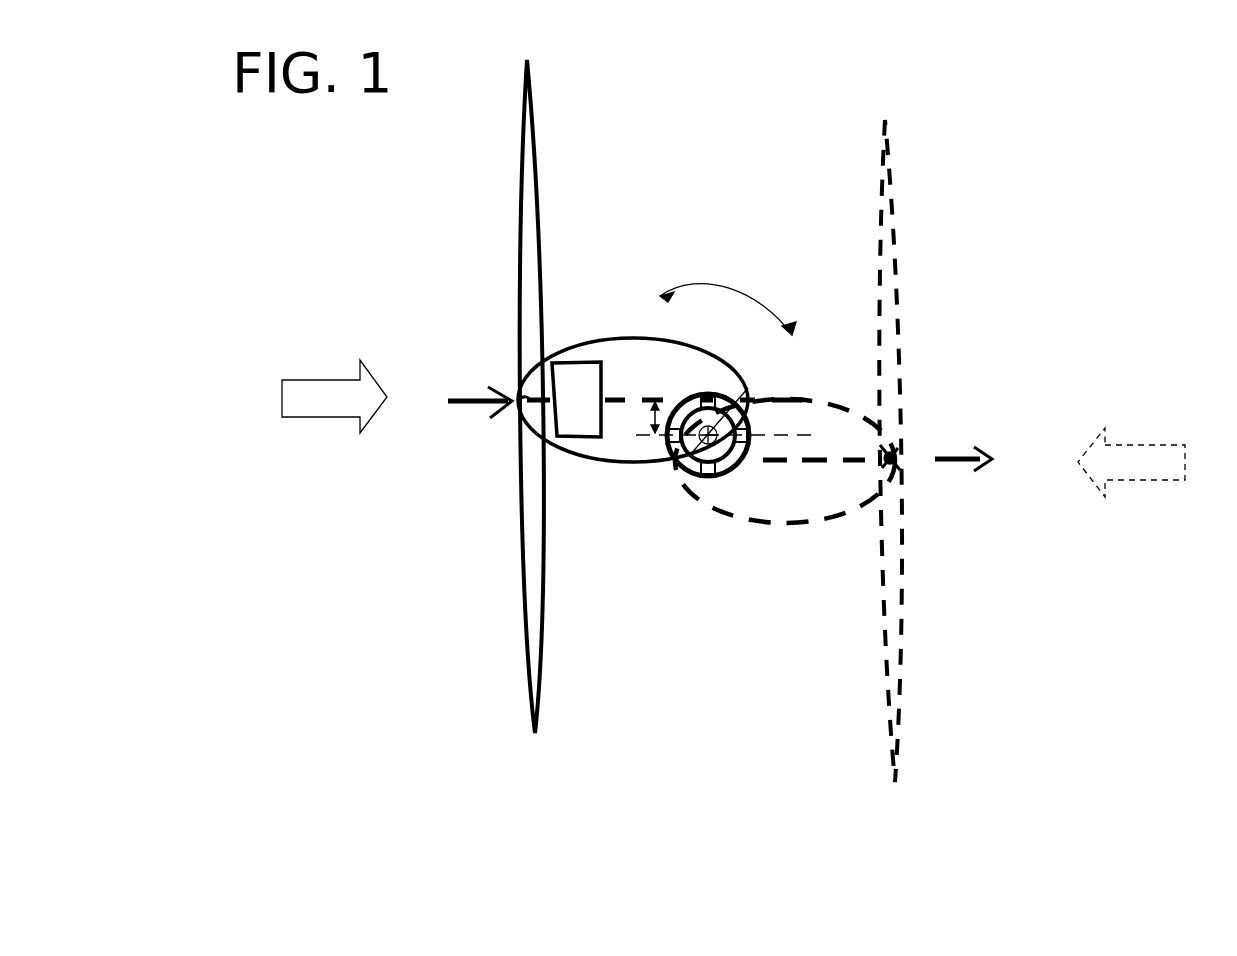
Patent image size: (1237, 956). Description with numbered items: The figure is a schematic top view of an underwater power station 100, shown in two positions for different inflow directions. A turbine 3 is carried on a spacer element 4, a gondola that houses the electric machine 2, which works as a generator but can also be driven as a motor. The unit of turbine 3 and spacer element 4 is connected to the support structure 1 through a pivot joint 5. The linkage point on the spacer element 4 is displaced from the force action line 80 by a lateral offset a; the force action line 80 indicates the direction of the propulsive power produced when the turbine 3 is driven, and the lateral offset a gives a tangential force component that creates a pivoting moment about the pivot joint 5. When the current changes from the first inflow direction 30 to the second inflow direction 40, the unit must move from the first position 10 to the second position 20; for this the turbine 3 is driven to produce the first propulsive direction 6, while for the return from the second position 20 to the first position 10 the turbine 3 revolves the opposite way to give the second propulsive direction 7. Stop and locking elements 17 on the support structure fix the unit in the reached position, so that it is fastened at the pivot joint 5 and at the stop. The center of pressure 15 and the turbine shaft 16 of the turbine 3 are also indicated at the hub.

The support structure 1 is at (674, 462).
The electric machine 2 is at (582, 399).
The turbine 3 is at (533, 152).
The spacer element 4 is at (612, 352).
The pivot joint 5 is at (741, 398).
The first propulsive direction 6 is at (478, 408).
The second propulsive direction 7 is at (966, 466).
The first position 10 is at (536, 819).
The center of pressure 15 is at (706, 393).
The turbine shaft 16 is at (753, 430).
The stop and locking element 17 is at (717, 478).
The second position 20 is at (911, 831).
The first inflow direction 30 is at (310, 410).
The second inflow direction 40 is at (1158, 482).
The force action line 80 is at (641, 383).
The underwater power station 100 is at (733, 218).
The lateral offset a is at (640, 422).